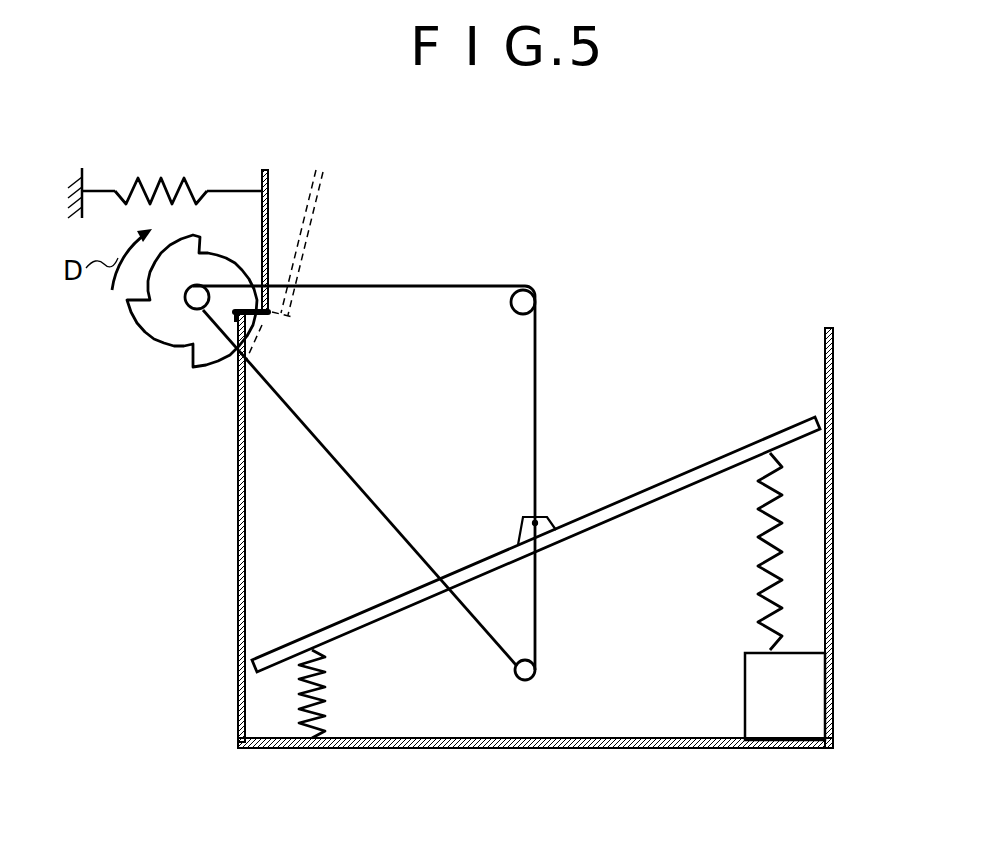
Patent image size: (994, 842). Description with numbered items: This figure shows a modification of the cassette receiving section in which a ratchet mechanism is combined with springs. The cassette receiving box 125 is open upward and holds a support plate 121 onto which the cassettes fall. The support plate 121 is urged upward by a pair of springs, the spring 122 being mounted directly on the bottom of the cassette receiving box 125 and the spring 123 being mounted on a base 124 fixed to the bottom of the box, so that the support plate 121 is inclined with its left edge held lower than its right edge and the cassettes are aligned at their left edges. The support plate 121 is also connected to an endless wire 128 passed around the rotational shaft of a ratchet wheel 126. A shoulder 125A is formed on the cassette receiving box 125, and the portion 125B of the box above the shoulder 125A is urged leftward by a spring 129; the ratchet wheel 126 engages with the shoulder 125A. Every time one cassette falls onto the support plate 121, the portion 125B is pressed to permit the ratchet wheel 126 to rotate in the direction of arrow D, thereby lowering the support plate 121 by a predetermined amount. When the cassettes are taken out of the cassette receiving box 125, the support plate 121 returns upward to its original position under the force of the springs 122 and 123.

The support plate 121 is at (787, 430).
The spring 122 is at (326, 680).
The spring 123 is at (767, 563).
The base 124 is at (790, 722).
The cassette receiving box 125 is at (858, 522).
The shoulder 125A is at (252, 323).
The portion of the cassette receiving box 125B is at (270, 178).
The ratchet wheel 126 is at (164, 317).
The endless wire 128 is at (438, 286).
The spring 129 is at (160, 181).